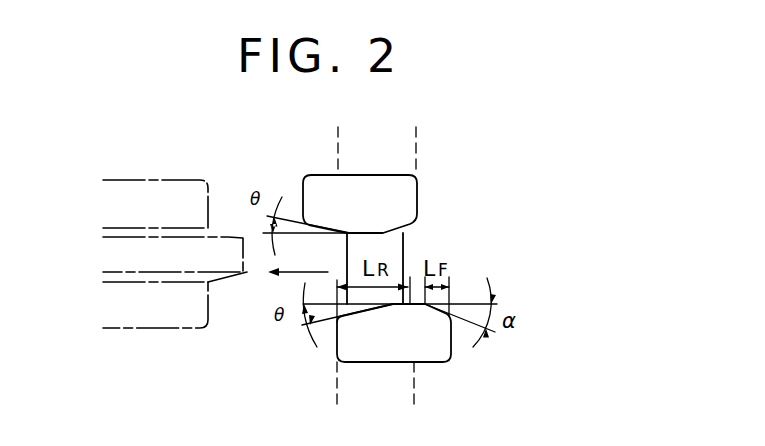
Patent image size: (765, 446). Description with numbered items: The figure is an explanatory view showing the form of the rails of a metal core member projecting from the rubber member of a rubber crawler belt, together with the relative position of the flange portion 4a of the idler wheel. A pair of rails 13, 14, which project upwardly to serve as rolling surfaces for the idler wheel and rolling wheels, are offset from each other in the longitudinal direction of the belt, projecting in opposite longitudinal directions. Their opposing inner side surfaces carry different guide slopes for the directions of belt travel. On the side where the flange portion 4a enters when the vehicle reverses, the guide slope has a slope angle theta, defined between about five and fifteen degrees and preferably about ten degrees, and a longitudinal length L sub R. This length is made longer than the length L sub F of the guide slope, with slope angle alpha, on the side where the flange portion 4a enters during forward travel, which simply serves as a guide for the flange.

The flange portion 4a is at (211, 228).
The rail 13 is at (363, 175).
The rail 14 is at (374, 362).